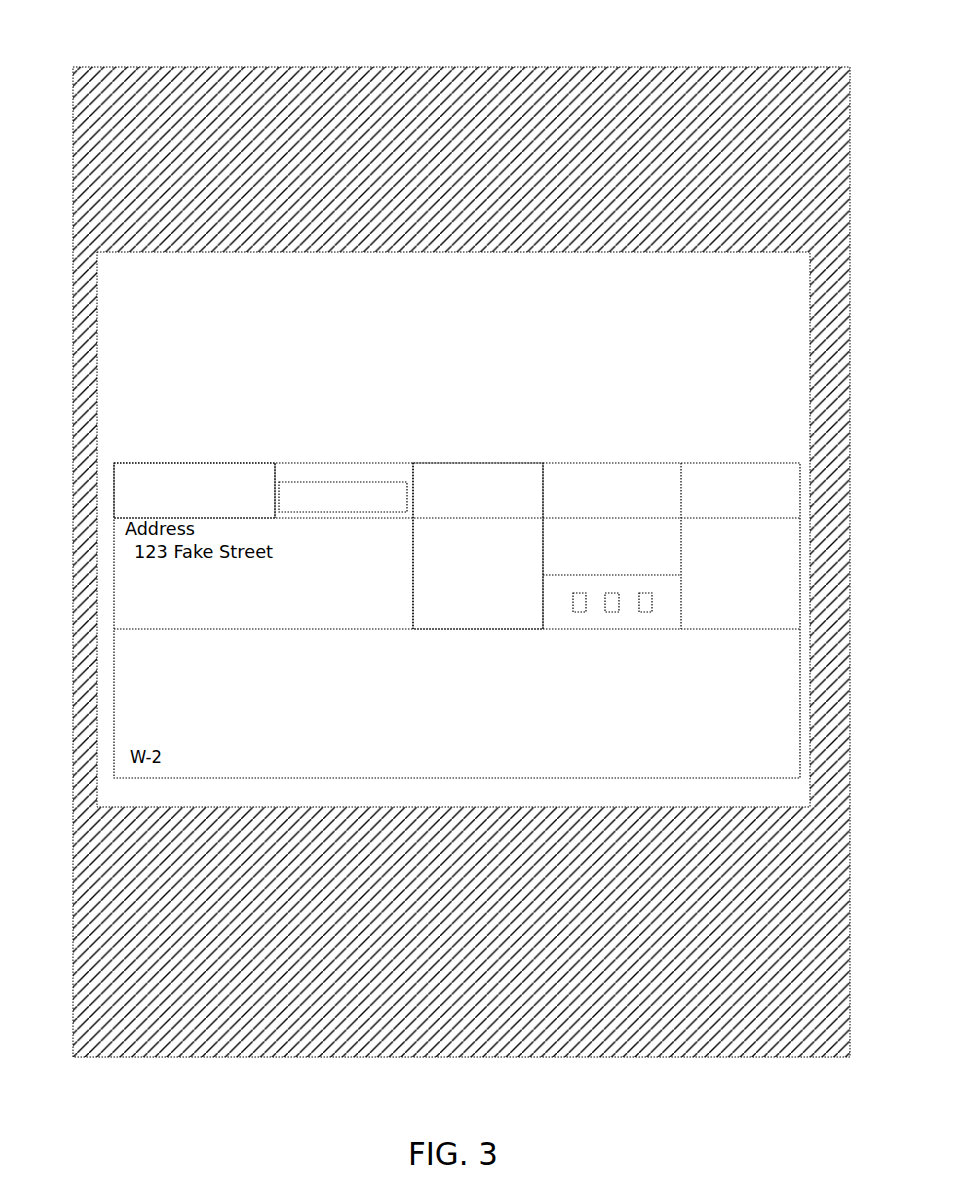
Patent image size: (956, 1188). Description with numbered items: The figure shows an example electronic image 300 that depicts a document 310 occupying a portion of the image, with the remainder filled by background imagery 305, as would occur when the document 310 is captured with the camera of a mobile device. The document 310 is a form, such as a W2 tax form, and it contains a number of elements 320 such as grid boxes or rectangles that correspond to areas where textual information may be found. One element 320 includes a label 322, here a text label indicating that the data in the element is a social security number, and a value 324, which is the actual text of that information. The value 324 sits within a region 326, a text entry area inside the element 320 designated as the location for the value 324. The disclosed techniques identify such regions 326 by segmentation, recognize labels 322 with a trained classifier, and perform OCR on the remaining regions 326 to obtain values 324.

The electronic image 300 is at (135, 36).
The background imagery 305 is at (415, 100).
The document 310 is at (92, 362).
The element 320 is at (220, 477).
The label 322 is at (297, 480).
The value 324 is at (378, 492).
The region 326 is at (397, 482).